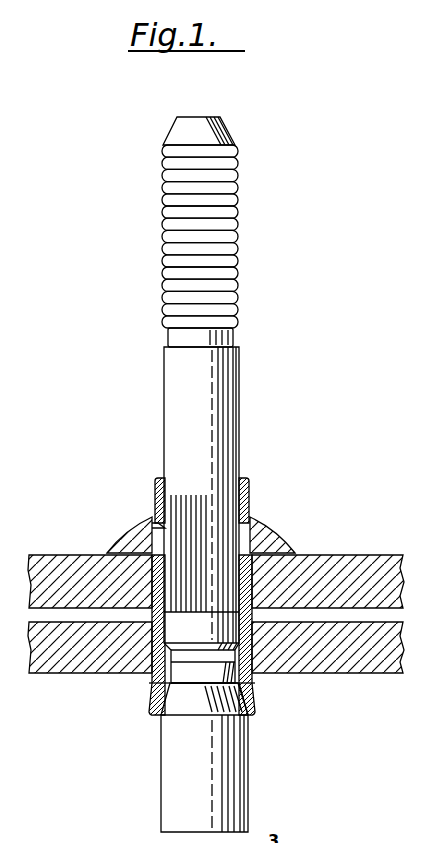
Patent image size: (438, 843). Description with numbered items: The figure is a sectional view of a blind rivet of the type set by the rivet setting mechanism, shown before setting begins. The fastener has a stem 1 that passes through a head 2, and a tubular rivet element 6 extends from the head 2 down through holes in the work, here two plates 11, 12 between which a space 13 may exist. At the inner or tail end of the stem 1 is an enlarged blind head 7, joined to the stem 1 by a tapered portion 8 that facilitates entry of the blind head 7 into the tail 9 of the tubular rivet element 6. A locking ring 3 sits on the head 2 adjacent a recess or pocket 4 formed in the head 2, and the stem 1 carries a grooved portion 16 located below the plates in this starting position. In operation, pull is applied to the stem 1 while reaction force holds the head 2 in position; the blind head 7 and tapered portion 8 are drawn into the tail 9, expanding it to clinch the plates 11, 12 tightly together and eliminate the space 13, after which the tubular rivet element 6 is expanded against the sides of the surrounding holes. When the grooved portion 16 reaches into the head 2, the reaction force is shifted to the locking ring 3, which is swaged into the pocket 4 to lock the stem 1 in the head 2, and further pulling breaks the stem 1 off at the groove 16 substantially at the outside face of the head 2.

The stem 1 is at (240, 397).
The head 2 is at (111, 548).
The locking ring 3 is at (247, 489).
The recess or pocket 4 is at (158, 526).
The tubular rivet element 6 is at (149, 676).
The enlarged blind head 7 is at (248, 763).
The tapered portion 8 is at (160, 700).
The tail 9 is at (251, 703).
The plate 11 is at (351, 673).
The plate 12 is at (356, 561).
The space 13 is at (393, 617).
The grooved portion 16 is at (245, 646).